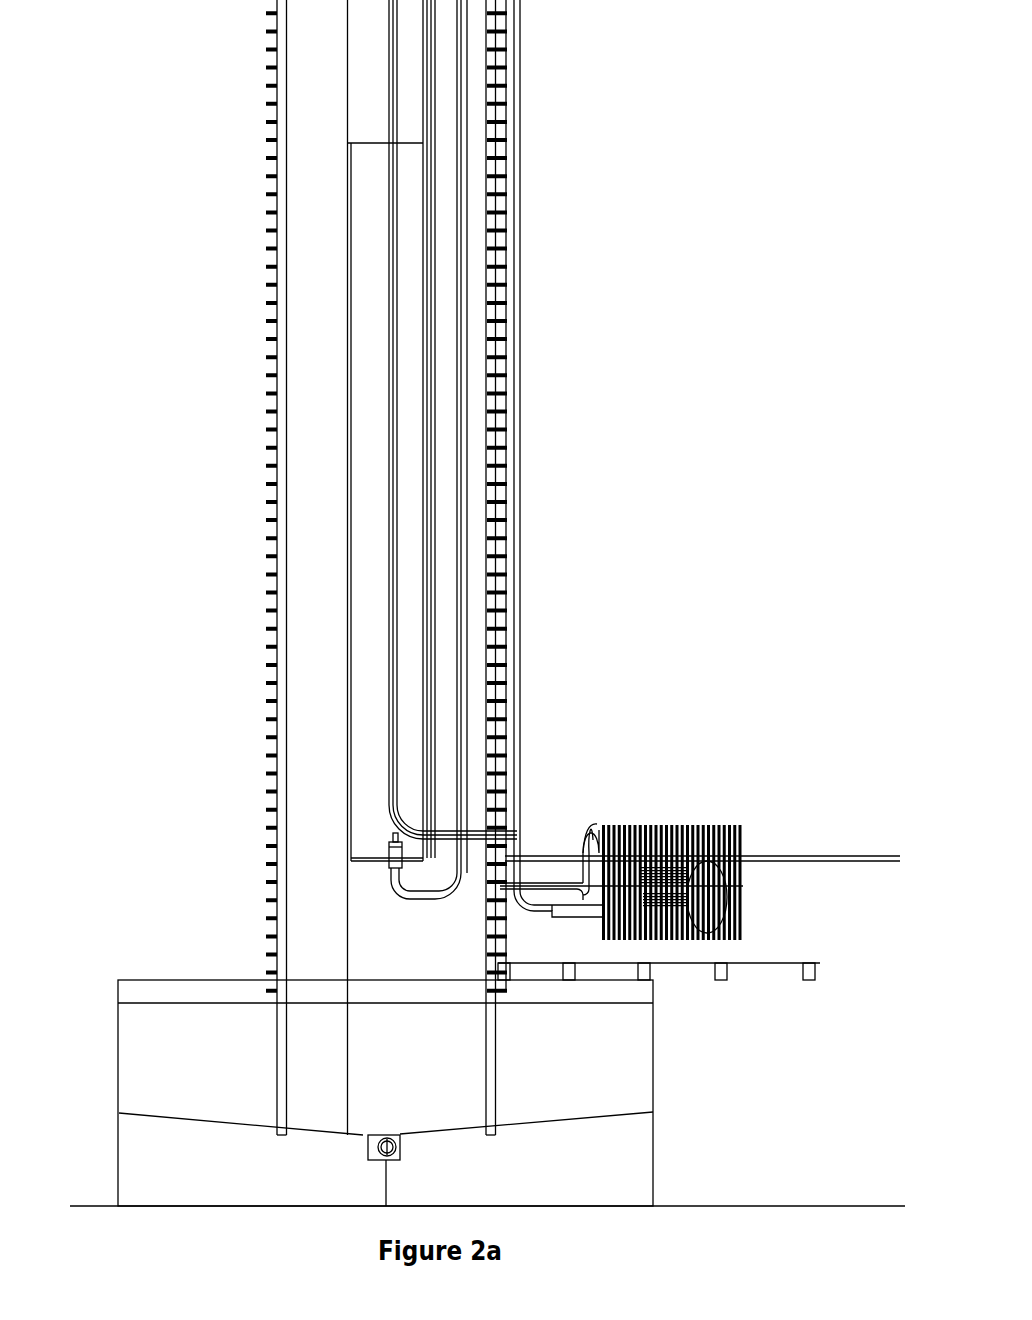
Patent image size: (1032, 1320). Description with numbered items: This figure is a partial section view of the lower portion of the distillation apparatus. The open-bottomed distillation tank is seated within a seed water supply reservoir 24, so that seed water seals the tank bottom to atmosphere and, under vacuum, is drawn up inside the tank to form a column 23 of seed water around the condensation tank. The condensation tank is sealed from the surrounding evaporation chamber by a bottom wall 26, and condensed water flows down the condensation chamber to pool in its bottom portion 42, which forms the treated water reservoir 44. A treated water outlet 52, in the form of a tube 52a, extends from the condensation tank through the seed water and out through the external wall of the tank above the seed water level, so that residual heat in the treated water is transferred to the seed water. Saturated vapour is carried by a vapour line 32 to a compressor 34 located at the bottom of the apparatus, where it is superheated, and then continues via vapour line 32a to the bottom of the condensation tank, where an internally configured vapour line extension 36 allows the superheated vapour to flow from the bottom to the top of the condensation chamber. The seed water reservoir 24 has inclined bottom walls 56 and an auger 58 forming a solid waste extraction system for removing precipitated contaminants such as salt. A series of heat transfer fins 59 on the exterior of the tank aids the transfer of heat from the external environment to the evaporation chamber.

The column 23 is at (311, 244).
The seed water supply reservoir 24 is at (165, 1063).
The bottom wall 26 is at (357, 867).
The vapour line 32 is at (508, 853).
The vapour line 32a is at (560, 840).
The compressor 34 is at (692, 825).
The vapour line extension 36 is at (397, 242).
The bottom portion 42 is at (347, 410).
The treated water reservoir 44 is at (372, 345).
The treated water outlet 52 is at (397, 890).
The tube 52a is at (470, 540).
The inclined bottom walls 56 is at (625, 1113).
The auger 58 is at (400, 1148).
The heat transfer fins 59 is at (269, 524).